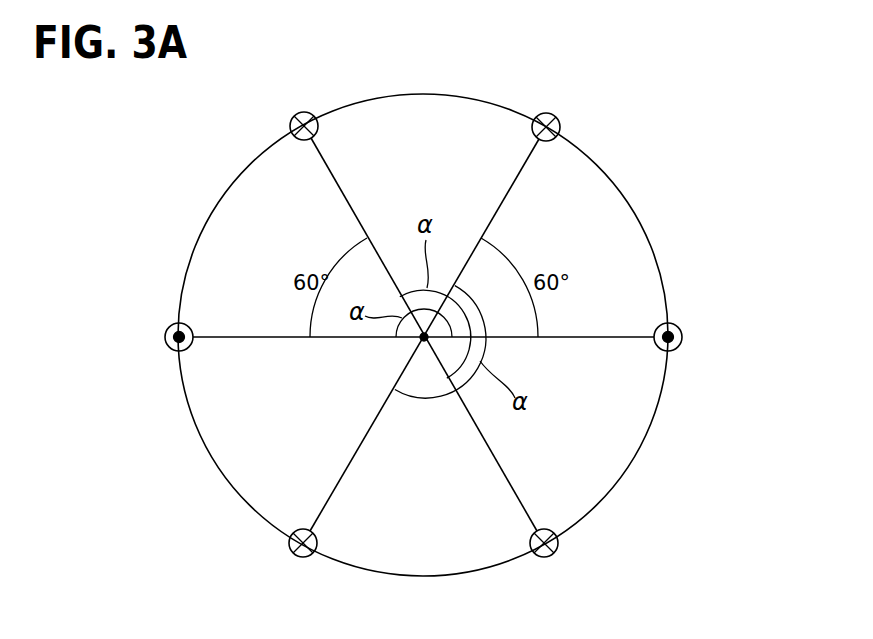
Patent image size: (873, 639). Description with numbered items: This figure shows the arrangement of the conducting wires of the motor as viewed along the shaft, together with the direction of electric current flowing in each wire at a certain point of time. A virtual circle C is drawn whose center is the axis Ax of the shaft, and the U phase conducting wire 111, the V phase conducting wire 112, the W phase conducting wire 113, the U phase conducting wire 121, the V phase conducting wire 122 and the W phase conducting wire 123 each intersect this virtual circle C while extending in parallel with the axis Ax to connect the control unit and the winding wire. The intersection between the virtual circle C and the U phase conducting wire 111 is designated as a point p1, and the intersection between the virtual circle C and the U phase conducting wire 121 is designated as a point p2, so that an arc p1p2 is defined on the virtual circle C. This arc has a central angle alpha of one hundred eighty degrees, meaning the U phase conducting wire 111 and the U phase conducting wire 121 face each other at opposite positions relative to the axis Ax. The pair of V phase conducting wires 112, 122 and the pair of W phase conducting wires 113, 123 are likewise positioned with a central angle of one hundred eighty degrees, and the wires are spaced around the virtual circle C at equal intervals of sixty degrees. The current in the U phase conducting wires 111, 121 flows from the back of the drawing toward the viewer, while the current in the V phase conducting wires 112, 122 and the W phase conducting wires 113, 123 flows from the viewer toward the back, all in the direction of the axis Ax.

The U phase conducting wire 111 is at (165, 337).
The V phase conducting wire 112 is at (298, 114).
The W phase conducting wire 113 is at (300, 557).
The U phase conducting wire 121 is at (684, 337).
The V phase conducting wire 122 is at (548, 557).
The W phase conducting wire 123 is at (553, 114).
The virtual circle C is at (633, 207).
The axis Ax is at (424, 337).
The point p1 is at (306, 112).
The point p2 is at (544, 113).